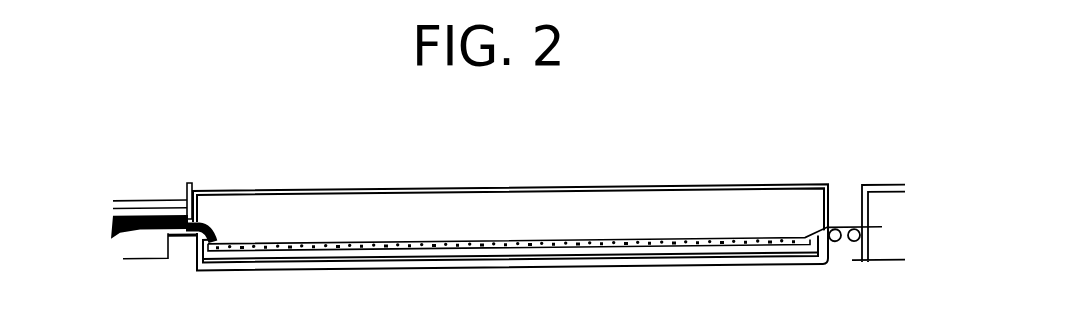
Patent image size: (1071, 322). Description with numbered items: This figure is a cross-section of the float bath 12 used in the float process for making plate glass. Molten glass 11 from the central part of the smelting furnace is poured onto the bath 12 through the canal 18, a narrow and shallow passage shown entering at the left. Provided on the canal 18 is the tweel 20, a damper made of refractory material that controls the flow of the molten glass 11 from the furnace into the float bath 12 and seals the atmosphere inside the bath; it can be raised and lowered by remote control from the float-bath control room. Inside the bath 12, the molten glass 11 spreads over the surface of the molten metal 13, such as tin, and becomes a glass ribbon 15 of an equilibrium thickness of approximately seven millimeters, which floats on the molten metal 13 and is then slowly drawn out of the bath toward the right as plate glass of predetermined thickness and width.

The molten glass 11 is at (125, 233).
The float bath 12 is at (445, 189).
The molten metal 13 is at (527, 247).
The glass ribbon 15 is at (537, 243).
The canal 18 is at (151, 208).
The tweel 20 is at (191, 184).